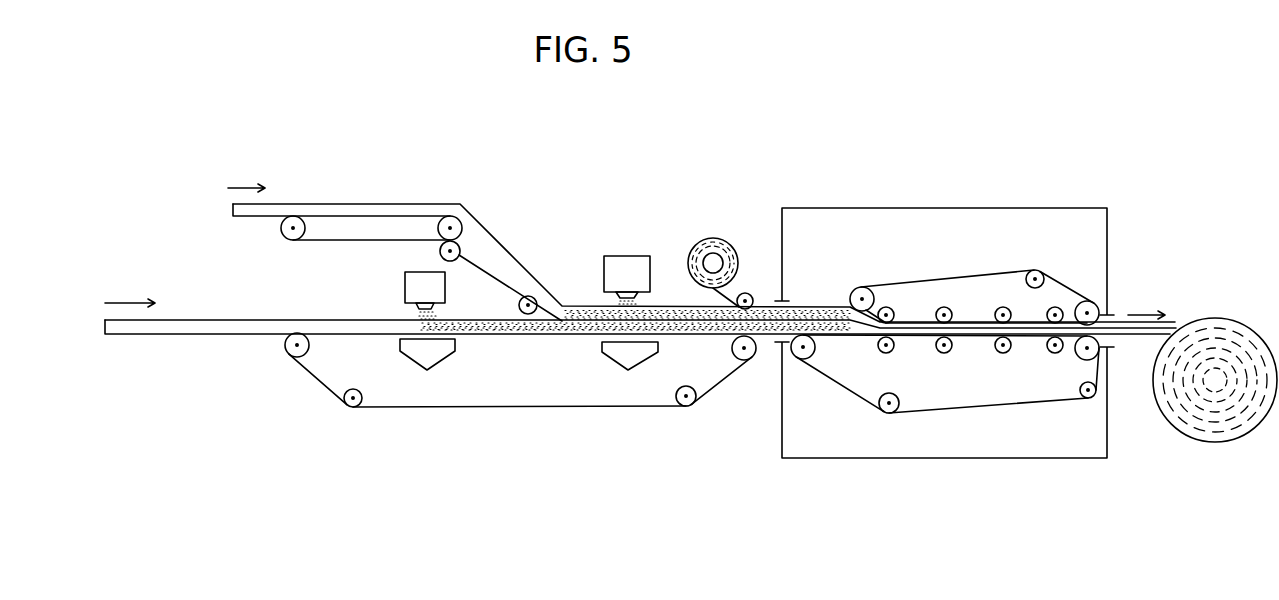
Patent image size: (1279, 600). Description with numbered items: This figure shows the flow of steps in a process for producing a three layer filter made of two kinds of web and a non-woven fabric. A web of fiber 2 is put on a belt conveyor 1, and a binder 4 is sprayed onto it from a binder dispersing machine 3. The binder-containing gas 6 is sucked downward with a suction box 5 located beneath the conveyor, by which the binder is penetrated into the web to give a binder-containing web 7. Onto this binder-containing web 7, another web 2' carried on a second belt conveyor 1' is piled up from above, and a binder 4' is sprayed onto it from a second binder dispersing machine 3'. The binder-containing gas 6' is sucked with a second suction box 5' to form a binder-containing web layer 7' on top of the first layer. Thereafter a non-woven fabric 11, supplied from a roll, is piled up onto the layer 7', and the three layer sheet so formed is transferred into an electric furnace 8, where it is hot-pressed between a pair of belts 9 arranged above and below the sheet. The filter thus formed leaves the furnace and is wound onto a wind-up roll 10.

The belt conveyor 1 is at (515, 384).
The belt conveyor 1' is at (421, 268).
The web of fiber 2 is at (640, 347).
The web 2' is at (704, 231).
The binder dispersing machine 3 is at (412, 283).
The binder dispersing machine 3' is at (606, 249).
The binder 4 is at (399, 287).
The binder 4' is at (606, 267).
The suction box 5 is at (442, 366).
The suction box 5' is at (612, 367).
The binder-containing gas 6 is at (450, 298).
The binder-containing gas 6' is at (600, 290).
The binder-containing web 7 is at (635, 390).
The binder-containing web layer 7' is at (707, 259).
The electric furnace 8 is at (816, 223).
The pair of belts 9 is at (972, 275).
The wind-up roll 10 is at (1217, 432).
The non-woven fabric 11 is at (706, 238).